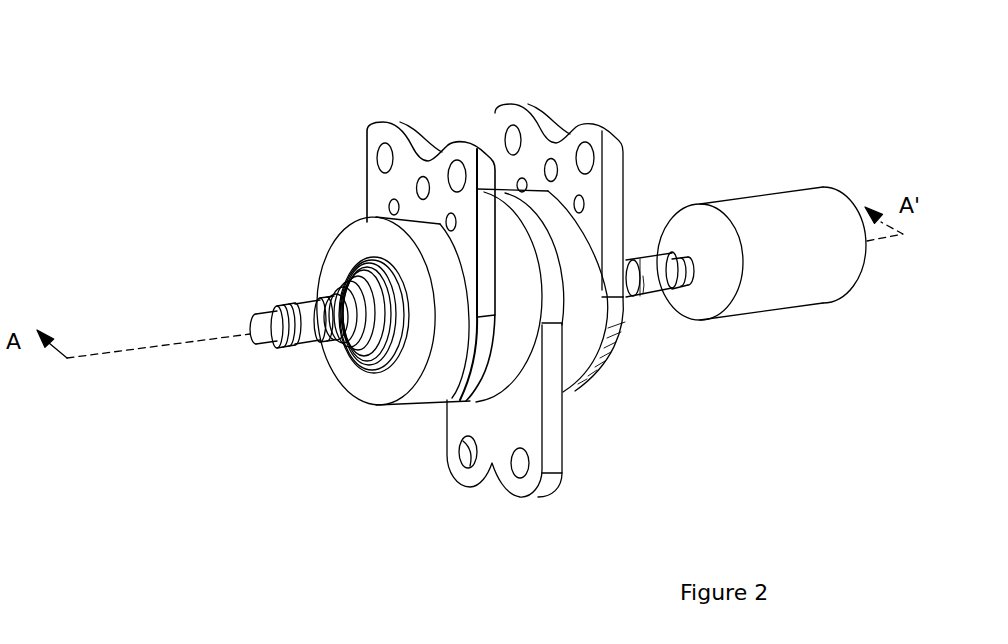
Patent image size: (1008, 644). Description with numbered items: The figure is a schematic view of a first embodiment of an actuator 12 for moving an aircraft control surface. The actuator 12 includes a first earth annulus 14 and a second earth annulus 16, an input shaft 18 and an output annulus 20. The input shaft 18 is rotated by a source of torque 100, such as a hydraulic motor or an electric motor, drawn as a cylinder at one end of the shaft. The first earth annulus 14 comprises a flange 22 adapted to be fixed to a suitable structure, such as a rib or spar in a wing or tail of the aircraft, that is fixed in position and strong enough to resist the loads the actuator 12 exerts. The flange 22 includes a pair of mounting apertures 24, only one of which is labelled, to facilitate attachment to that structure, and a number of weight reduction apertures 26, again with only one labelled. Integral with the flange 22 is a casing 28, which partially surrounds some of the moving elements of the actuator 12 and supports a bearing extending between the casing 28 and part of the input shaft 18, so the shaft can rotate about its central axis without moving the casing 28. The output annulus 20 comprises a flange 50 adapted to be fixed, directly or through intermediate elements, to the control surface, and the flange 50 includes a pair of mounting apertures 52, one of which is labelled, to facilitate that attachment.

The actuator 12 is at (230, 167).
The first earth annulus 14 is at (374, 125).
The second earth annulus 16 is at (557, 133).
The input shaft 18 is at (257, 333).
The output annulus 20 is at (553, 437).
The flange 22 is at (415, 137).
The mounting aperture 24 is at (386, 158).
The weight reduction aperture 26 is at (417, 188).
The casing 28 is at (372, 235).
The flange 50 is at (477, 423).
The mounting aperture 52 is at (466, 453).
The source of torque 100 is at (774, 193).